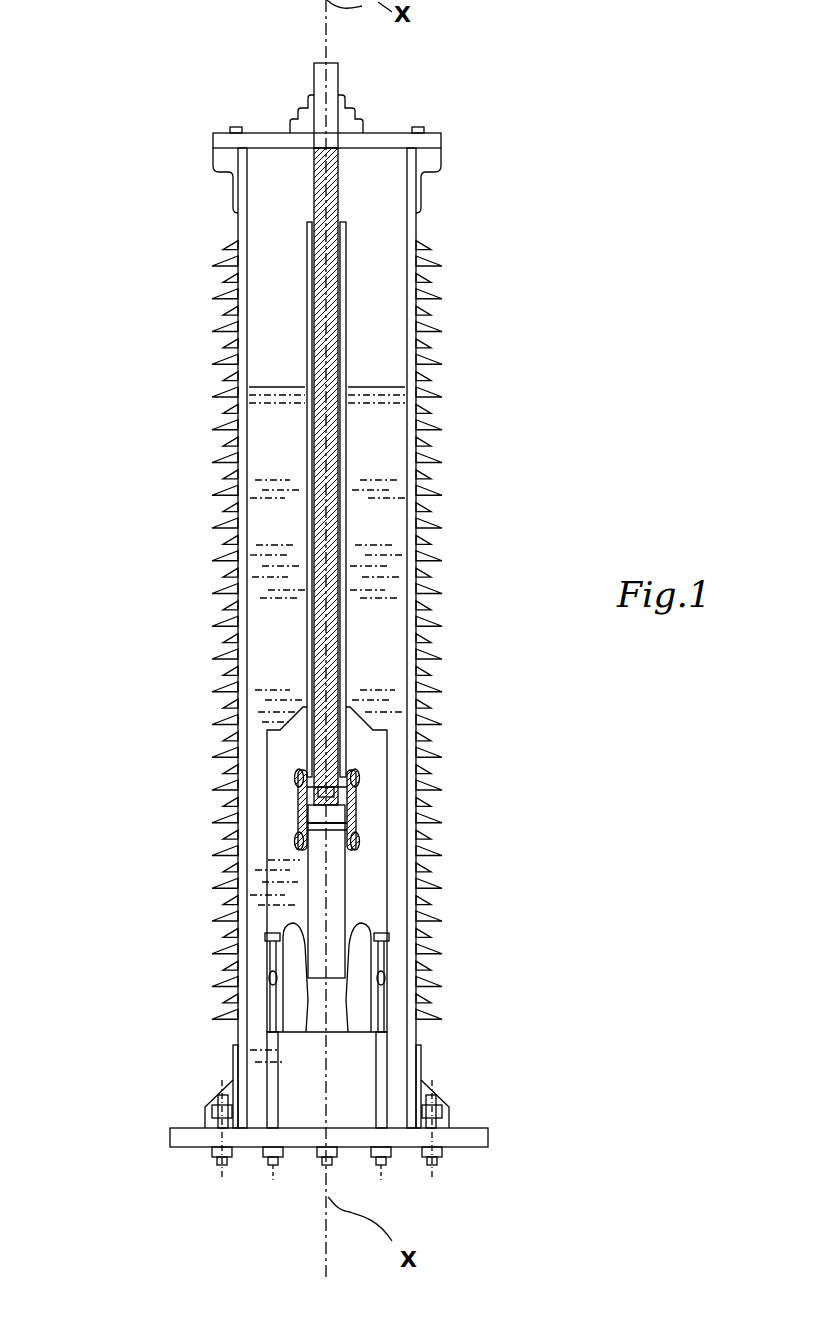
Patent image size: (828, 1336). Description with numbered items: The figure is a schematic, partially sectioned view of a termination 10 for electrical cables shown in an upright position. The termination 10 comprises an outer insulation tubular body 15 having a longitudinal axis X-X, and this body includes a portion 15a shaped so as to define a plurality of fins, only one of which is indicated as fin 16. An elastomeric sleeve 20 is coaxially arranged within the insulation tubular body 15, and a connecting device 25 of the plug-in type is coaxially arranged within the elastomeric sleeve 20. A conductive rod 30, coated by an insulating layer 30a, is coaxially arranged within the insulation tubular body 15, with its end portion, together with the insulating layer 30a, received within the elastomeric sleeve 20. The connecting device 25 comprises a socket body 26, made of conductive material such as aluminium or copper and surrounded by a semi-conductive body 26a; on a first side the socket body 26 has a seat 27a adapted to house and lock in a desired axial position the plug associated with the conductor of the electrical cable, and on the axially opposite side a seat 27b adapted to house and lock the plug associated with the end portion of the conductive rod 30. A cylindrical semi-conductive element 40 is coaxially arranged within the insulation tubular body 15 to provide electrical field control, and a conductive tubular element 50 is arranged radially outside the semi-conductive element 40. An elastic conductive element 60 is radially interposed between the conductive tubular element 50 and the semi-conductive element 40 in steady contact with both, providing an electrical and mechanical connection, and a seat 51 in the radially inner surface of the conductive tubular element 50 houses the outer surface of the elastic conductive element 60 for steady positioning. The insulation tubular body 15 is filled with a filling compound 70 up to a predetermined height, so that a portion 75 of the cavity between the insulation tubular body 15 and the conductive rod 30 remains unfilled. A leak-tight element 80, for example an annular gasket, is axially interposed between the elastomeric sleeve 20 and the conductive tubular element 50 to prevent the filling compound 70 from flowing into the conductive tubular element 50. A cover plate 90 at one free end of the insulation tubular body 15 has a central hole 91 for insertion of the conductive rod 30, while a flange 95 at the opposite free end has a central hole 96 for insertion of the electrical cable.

The termination 10 is at (480, 507).
The insulation tubular body 15 is at (268, 384).
The finned portion 15a is at (210, 598).
The fin 16 is at (215, 626).
The elastomeric sleeve 20 is at (376, 887).
The connecting device 25 is at (390, 770).
The socket body 26 is at (358, 806).
The semi-conductive body 26a is at (297, 823).
The seat 27a is at (293, 834).
The seat 27b is at (290, 776).
The conductive rod 30 is at (335, 476).
The insulating layer 30a is at (345, 341).
The semi-conductive element 40 is at (362, 961).
The conductive tubular element 50 is at (383, 1082).
The seat 51 is at (245, 985).
The elastic conductive element 60 is at (385, 982).
The filling compound 70 is at (378, 615).
The unfilled cavity portion 75 is at (395, 265).
The leak-tight element 80 is at (268, 940).
The cover plate 90 is at (222, 136).
The central hole 91 is at (358, 107).
The flange 95 is at (197, 1138).
The central hole 96 is at (354, 1160).